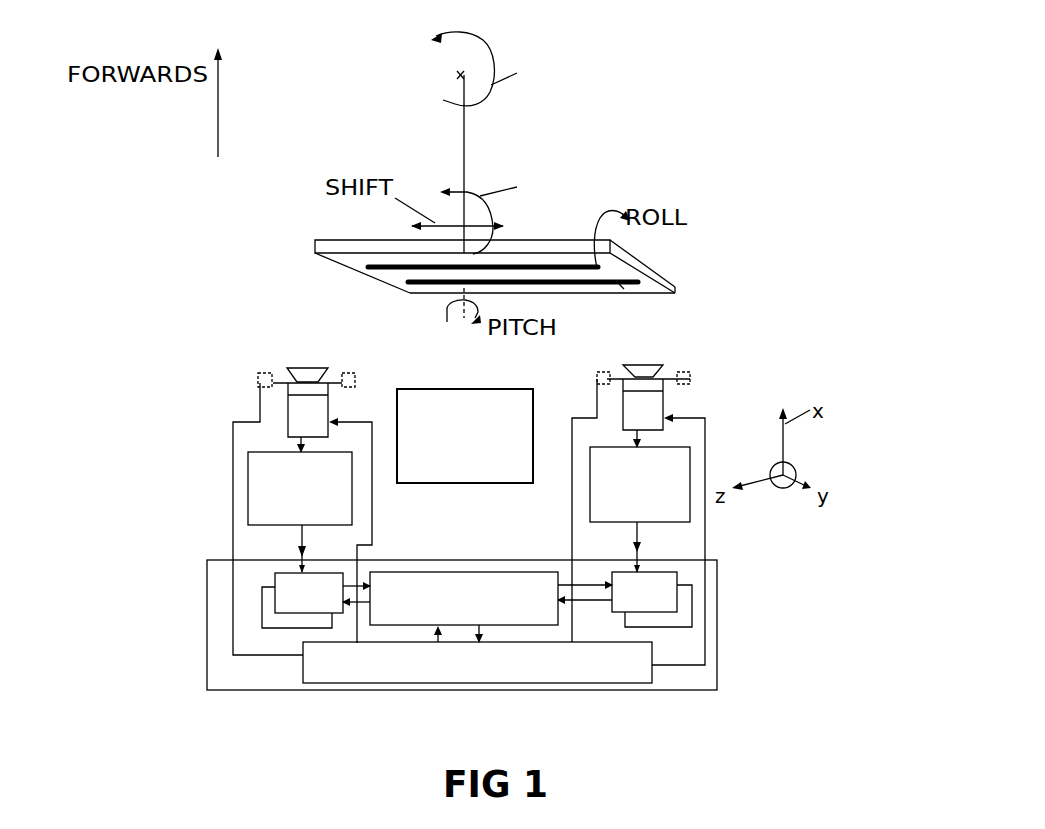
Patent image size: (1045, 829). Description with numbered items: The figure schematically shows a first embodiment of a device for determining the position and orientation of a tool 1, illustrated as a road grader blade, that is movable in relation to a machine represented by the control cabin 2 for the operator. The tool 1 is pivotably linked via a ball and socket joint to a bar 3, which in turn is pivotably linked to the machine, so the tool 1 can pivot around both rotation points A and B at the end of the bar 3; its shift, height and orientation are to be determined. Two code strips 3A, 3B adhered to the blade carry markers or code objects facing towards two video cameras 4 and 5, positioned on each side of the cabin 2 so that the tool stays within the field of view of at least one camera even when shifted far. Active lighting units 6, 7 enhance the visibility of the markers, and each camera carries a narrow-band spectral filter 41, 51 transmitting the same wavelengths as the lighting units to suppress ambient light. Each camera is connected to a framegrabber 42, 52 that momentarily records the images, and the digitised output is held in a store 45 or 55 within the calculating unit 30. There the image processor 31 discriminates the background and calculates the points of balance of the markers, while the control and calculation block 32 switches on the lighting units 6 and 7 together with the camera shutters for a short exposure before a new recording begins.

The tool 1 is at (663, 281).
The control cabin 2 is at (477, 482).
The bar 3 is at (463, 150).
The code strip 3A is at (378, 270).
The code strip 3B is at (410, 290).
The imaging area 4 is at (300, 367).
The imaging area 5 is at (650, 372).
The active lighting unit 6 is at (258, 383).
The active lighting unit 7 is at (595, 379).
The calculating unit 30 is at (720, 613).
The image processor 31 is at (463, 555).
The block 32 is at (537, 673).
The spectral filter 41 is at (288, 388).
The framegrabber 42 is at (248, 497).
The store 45 is at (275, 595).
The spectral filter 51 is at (665, 388).
The framegrabber 52 is at (690, 507).
The store 55 is at (678, 598).
The rotation point A is at (463, 73).
The rotation point B is at (450, 243).